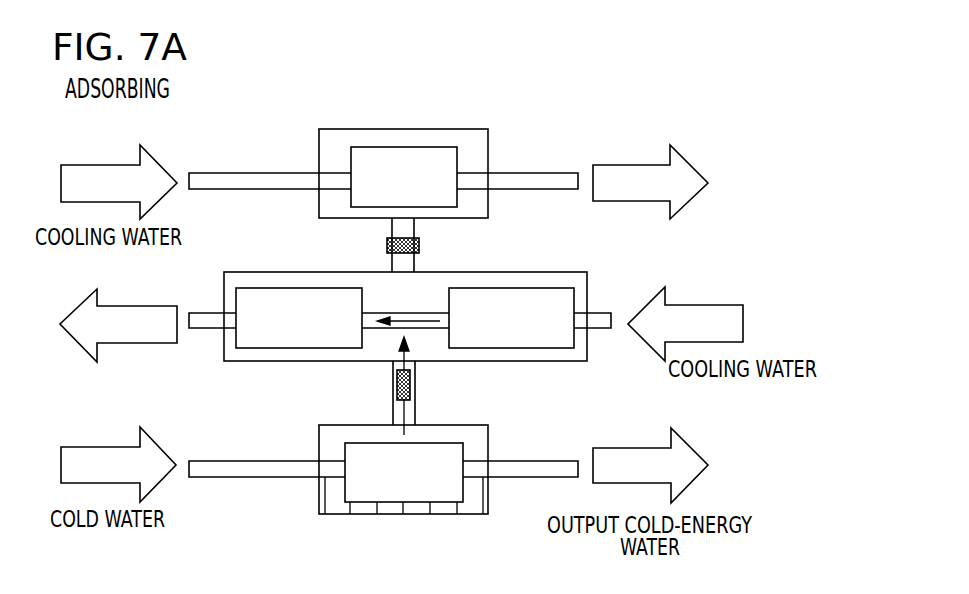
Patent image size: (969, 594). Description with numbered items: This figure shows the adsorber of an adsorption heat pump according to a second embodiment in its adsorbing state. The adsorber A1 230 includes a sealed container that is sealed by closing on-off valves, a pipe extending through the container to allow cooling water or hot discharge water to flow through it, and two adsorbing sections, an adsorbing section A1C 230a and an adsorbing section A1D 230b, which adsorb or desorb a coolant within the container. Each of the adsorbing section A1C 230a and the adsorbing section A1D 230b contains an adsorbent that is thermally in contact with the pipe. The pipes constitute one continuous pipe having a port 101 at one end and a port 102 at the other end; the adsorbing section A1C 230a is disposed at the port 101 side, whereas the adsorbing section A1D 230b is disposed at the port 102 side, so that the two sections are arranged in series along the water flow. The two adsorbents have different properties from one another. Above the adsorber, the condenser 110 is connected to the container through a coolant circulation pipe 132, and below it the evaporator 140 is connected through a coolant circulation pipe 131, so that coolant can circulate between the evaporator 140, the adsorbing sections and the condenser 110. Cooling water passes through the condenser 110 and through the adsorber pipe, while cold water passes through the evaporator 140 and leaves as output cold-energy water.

The condenser 110 is at (462, 138).
The coolant circulation pipe 132 is at (390, 228).
The adsorber A1 230 is at (406, 279).
The adsorbing section A1C 230a is at (323, 287).
The adsorbing section A1D 230b is at (553, 287).
The port 101 is at (205, 323).
The port 102 is at (602, 322).
The coolant circulation pipe 131 is at (393, 408).
The evaporator 140 is at (332, 450).